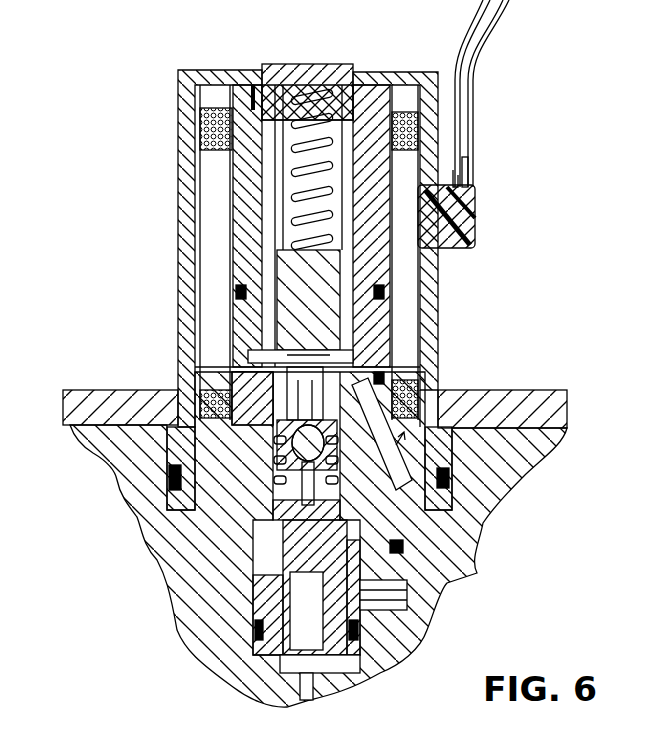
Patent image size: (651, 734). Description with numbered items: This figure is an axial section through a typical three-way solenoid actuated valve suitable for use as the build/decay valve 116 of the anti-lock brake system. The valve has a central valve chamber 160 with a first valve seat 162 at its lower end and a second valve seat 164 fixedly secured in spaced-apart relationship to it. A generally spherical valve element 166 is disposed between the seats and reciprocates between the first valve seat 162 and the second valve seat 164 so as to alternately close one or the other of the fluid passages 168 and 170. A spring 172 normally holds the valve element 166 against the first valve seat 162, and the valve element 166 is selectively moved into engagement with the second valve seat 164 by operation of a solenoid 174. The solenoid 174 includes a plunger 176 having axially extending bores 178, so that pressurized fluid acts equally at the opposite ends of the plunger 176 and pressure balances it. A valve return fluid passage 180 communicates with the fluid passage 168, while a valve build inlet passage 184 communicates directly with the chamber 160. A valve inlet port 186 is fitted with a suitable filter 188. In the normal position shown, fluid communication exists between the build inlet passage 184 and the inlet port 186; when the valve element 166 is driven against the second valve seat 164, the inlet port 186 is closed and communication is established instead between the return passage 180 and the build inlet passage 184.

The build/decay valve 116 is at (178, 123).
The central valve chamber 160 is at (235, 582).
The first valve seat 162 is at (273, 440).
The second valve seat 164 is at (300, 540).
The valve element 166 is at (273, 460).
The fluid passage 168 is at (350, 370).
The fluid passage 170 is at (280, 505).
The spring 172 is at (360, 456).
The solenoid 174 is at (214, 192).
The plunger 176 is at (365, 123).
The axially extending bores 178 is at (272, 130).
The valve return fluid passage 180 is at (445, 457).
The valve build inlet passage 184 is at (400, 575).
The valve inlet port 186 is at (305, 633).
The filter 188 is at (395, 656).